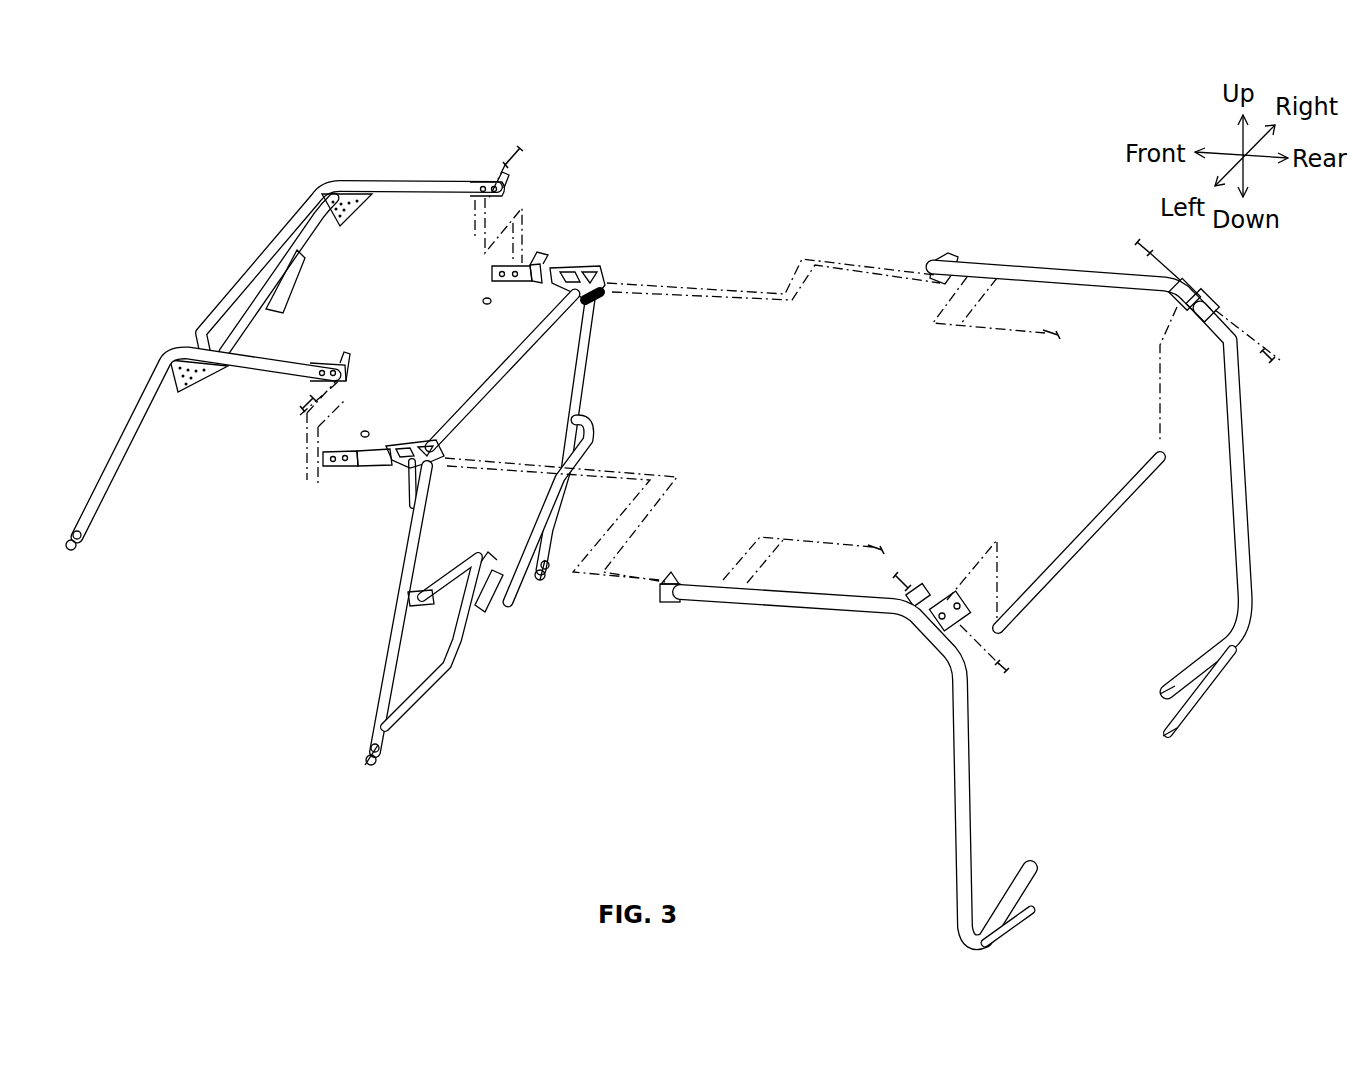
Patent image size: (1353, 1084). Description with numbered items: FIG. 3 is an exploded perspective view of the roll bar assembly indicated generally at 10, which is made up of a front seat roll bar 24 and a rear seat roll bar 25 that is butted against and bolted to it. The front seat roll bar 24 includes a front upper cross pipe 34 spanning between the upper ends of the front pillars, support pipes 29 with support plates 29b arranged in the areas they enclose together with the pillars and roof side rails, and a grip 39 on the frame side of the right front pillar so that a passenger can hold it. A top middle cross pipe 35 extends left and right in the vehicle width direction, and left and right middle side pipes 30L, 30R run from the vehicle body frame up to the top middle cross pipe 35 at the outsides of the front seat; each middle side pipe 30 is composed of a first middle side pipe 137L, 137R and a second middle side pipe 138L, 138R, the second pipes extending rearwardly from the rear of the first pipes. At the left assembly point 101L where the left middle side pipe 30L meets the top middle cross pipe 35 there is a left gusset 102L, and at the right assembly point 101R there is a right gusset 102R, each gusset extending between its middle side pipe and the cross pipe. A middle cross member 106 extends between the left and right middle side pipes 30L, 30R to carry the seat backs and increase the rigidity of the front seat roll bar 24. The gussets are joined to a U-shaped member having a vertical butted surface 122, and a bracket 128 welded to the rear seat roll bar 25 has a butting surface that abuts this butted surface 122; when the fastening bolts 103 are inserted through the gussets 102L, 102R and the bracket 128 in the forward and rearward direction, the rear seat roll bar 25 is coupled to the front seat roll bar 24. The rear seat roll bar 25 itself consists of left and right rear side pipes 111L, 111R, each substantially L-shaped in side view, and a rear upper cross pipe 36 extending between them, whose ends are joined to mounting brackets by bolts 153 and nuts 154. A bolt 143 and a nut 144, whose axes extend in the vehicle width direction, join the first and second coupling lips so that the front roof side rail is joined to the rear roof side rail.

The vehicle frame structure 10 is at (182, 217).
The front upper cross pipe 34 is at (258, 262).
The right first middle side pipe 137R is at (393, 183).
The support pipe 29 is at (358, 208).
The support plate 29b is at (345, 220).
The grip 39 is at (307, 278).
The left first middle side pipe 137L is at (273, 357).
The bolt 143 is at (520, 146).
The front seat roll bar 24 is at (570, 184).
The right assembly point 101R is at (606, 266).
The right second middle side pipe 138R is at (540, 262).
The right gusset 102R is at (622, 278).
The nut 144 is at (483, 301).
The butted surface 122 is at (610, 298).
The top middle cross pipe 35 is at (512, 345).
The left second middle side pipe 138L is at (385, 478).
The left gusset 102L is at (390, 495).
The left assembly point 101L is at (410, 494).
The right middle side pipe 30R is at (568, 580).
The middle side pipe 30 is at (542, 570).
The left middle side pipe 30L is at (400, 770).
The middle cross member 106 is at (497, 625).
The bracket 128 is at (935, 265).
The rear seat roll bar 25 is at (1008, 246).
The bolt 153 is at (1135, 242).
The fastening bolt 103 is at (1058, 336).
The nut 154 is at (1272, 358).
The rear upper cross pipe 36 is at (1105, 525).
The right rear side pipe 111R is at (1225, 505).
The left rear side pipe 111L is at (942, 798).